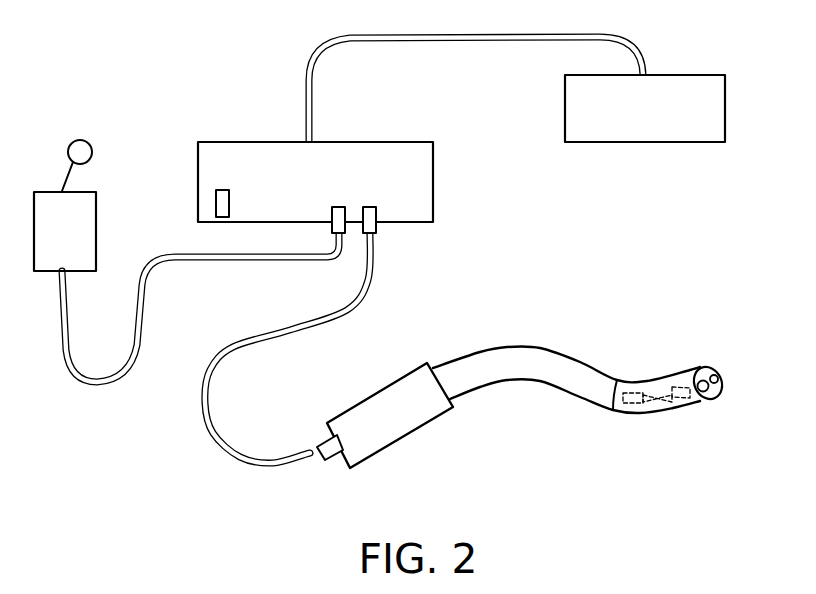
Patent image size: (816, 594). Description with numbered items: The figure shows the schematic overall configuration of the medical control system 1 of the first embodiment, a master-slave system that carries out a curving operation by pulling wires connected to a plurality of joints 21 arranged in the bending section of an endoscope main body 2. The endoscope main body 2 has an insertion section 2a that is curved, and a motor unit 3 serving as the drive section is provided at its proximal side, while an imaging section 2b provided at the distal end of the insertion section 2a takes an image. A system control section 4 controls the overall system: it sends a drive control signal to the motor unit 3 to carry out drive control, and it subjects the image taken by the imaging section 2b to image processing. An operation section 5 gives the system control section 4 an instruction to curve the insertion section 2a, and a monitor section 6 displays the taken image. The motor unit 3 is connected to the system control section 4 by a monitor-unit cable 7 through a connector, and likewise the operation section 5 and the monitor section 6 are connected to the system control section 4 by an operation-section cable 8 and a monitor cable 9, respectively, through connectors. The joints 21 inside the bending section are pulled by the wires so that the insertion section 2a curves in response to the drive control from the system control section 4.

The medical control system 1 is at (188, 115).
The endoscope main body 2 is at (637, 357).
The insertion section 2a is at (657, 380).
The imaging section 2b is at (723, 380).
The joints 21 is at (665, 413).
The motor unit 3 is at (398, 375).
The system control section 4 is at (433, 183).
The operation section 5 is at (52, 191).
The monitor section 6 is at (652, 143).
The monitor-unit cable 7 is at (296, 322).
The operation-section cable 8 is at (186, 264).
The monitor cable 9 is at (470, 42).